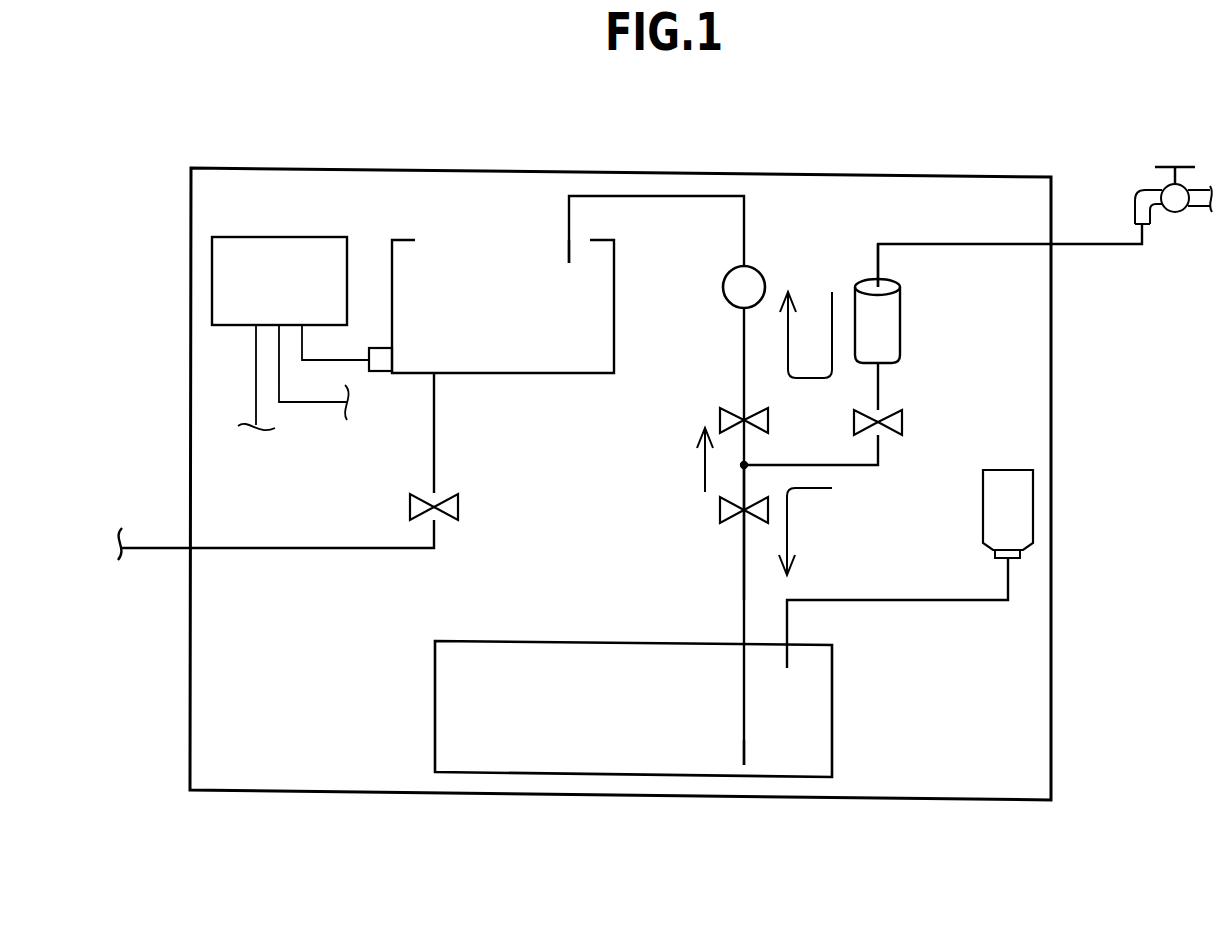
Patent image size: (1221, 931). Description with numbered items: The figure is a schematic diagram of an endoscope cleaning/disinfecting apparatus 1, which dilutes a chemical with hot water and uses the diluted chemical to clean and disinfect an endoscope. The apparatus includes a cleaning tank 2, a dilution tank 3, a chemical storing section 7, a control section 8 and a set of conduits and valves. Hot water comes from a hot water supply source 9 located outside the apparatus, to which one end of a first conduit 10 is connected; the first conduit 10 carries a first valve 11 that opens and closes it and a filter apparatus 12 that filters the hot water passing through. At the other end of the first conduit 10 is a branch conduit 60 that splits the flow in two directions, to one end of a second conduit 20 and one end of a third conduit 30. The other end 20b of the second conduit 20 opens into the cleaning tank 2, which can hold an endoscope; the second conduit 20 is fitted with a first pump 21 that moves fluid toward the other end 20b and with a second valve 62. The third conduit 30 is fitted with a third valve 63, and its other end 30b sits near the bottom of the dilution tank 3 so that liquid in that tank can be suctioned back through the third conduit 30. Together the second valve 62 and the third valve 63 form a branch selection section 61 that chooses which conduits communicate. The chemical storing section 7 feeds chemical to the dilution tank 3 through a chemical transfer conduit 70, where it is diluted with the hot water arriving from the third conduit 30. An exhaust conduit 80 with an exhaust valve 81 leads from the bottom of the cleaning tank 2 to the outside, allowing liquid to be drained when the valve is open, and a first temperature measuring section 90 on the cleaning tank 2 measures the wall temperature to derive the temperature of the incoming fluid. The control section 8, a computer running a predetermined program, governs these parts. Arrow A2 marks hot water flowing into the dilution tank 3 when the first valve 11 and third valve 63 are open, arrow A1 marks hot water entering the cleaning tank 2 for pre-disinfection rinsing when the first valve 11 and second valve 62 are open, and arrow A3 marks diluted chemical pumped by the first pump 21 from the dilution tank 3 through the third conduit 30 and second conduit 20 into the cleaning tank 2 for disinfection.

The endoscope cleaning/disinfecting apparatus 1 is at (243, 168).
The cleaning tank 2 is at (415, 237).
The dilution tank 3 is at (620, 777).
The chemical storing section 7 is at (1033, 510).
The control section 8 is at (212, 278).
The hot water supply source 9 is at (1150, 190).
The first conduit 10 is at (950, 246).
The first valve 11 is at (902, 422).
The filter apparatus 12 is at (902, 303).
The second conduit 20 is at (667, 196).
The other end of the second conduit 20b is at (569, 250).
The first pump 21 is at (727, 272).
The third conduit 30 is at (743, 597).
The other end of the third conduit 30b is at (743, 745).
The branch conduit 60 is at (746, 465).
The branch selection section 61 is at (662, 492).
The second valve 62 is at (720, 418).
The third valve 63 is at (718, 510).
The chemical transfer conduit 70 is at (962, 602).
The exhaust conduit 80 is at (317, 548).
The exhaust valve 81 is at (410, 505).
The first temperature measuring section 90 is at (378, 347).
The arrow A1 is at (790, 328).
The arrow A2 is at (790, 530).
The arrow A3 is at (706, 462).